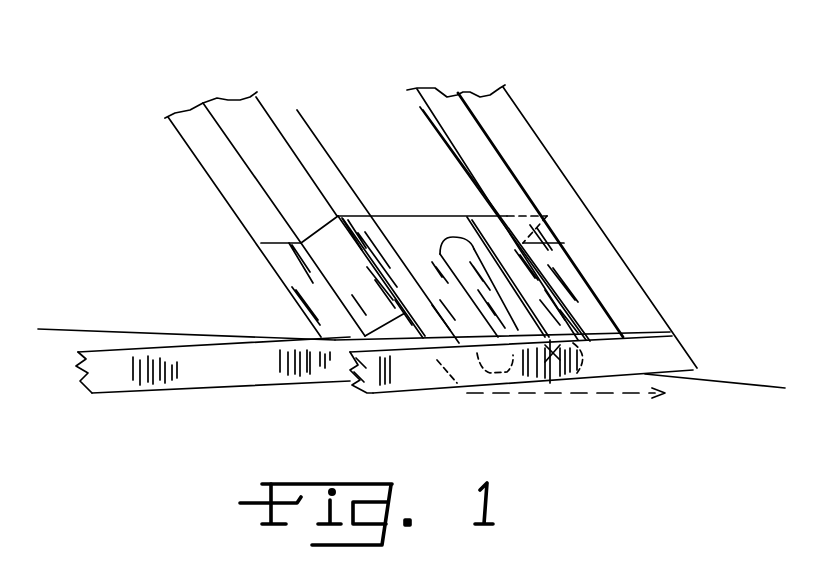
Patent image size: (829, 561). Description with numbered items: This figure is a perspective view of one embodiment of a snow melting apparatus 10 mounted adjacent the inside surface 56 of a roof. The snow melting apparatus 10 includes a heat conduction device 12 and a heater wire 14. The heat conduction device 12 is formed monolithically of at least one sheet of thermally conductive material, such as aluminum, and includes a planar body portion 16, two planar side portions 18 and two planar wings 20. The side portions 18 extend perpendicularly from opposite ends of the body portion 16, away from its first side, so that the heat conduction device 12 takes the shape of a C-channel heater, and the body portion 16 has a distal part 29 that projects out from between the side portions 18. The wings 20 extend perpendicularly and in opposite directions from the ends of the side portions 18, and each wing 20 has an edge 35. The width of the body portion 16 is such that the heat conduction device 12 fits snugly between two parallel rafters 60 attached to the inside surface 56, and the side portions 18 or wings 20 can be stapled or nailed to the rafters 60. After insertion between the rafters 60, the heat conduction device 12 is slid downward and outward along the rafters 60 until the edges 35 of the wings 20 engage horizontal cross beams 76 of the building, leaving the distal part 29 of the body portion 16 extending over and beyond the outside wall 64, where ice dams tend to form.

The snow melting apparatus 10 is at (657, 190).
The heat conduction device 12 is at (427, 229).
The heater wire 14 is at (435, 130).
The planar body portion 16 is at (540, 394).
The planar side portions 18 is at (353, 266).
The planar wings 20 is at (567, 280).
The distal part 29 is at (605, 395).
The edge 35 is at (612, 336).
The inside surface 56 is at (190, 248).
The rafters 60 is at (478, 107).
The outside wall 64 is at (80, 330).
The horizontal cross beams 76 is at (350, 385).